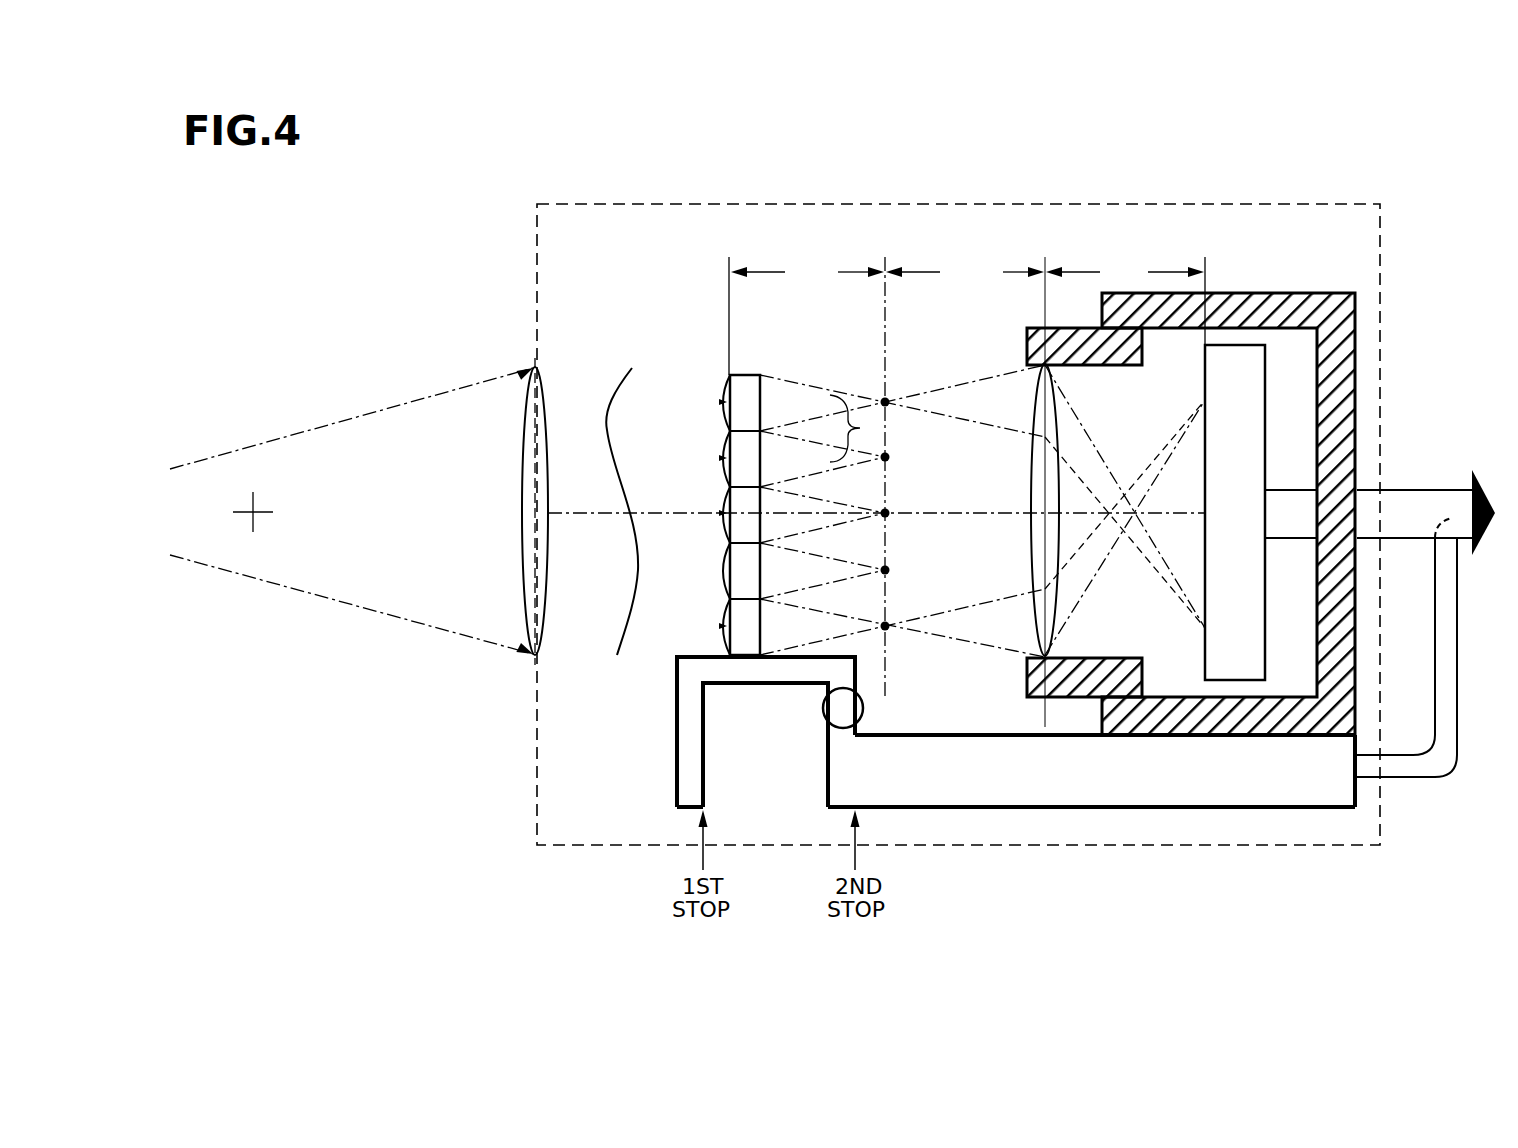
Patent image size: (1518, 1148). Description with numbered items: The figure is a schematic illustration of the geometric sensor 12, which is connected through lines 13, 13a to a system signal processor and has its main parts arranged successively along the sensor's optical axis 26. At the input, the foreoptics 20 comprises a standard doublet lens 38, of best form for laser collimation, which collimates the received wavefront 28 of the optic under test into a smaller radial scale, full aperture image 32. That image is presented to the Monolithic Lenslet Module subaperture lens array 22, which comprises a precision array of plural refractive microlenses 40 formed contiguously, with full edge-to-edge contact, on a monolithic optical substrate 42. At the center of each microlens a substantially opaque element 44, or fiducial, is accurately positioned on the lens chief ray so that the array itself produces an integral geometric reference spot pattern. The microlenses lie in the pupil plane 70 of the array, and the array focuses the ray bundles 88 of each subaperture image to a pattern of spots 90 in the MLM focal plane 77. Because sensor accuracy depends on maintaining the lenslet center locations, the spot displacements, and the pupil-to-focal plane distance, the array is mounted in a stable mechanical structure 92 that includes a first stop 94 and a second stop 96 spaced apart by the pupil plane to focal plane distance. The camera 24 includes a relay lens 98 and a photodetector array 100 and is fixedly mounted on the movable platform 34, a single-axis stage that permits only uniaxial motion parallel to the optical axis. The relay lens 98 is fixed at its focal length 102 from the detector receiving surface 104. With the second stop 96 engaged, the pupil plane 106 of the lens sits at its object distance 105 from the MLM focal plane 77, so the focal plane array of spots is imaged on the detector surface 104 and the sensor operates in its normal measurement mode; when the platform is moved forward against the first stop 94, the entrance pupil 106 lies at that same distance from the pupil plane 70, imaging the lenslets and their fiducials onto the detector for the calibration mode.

The geometric sensor 12 is at (475, 230).
The lines 13 is at (1398, 497).
The line 13a is at (1400, 775).
The foreoptics 20 is at (550, 481).
The Monolithic Lenslet Module subaperture lens array 22 is at (720, 453).
The camera 24 is at (1255, 292).
The optical axis 26 is at (1007, 513).
The received wavefront 28 is at (168, 472).
The full aperture image 32 is at (608, 422).
The movable platform 34 is at (1018, 785).
The doublet lens 38 is at (523, 450).
The refractive microlenses 40 is at (722, 430).
The monolithic optical substrate 42 is at (745, 378).
The opaque element 44 is at (722, 402).
The pupil plane 70 is at (731, 292).
The MLM focal plane 77 is at (888, 298).
The ray bundles 88 is at (864, 429).
The spots 90 is at (888, 400).
The mechanical structure 92 is at (742, 740).
The first stop 94 is at (692, 753).
The second stop 96 is at (833, 782).
The relay lens 98 is at (1028, 488).
The photodetector array 100 is at (1254, 388).
The focal length 102 is at (1145, 258).
The receiving surface 104 is at (1205, 468).
The object distance 105 is at (948, 252).
The pupil plane 106 is at (1033, 323).